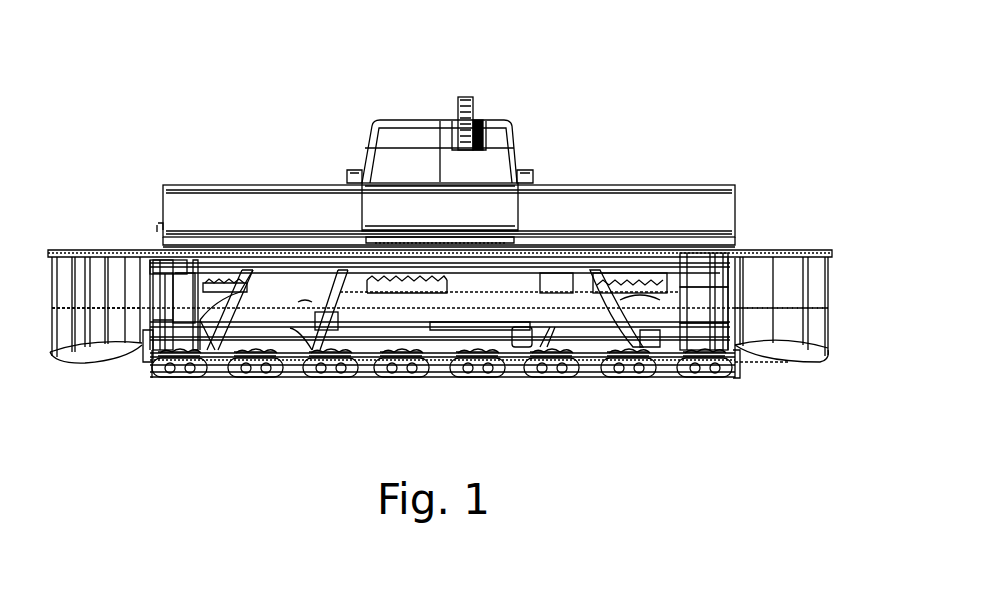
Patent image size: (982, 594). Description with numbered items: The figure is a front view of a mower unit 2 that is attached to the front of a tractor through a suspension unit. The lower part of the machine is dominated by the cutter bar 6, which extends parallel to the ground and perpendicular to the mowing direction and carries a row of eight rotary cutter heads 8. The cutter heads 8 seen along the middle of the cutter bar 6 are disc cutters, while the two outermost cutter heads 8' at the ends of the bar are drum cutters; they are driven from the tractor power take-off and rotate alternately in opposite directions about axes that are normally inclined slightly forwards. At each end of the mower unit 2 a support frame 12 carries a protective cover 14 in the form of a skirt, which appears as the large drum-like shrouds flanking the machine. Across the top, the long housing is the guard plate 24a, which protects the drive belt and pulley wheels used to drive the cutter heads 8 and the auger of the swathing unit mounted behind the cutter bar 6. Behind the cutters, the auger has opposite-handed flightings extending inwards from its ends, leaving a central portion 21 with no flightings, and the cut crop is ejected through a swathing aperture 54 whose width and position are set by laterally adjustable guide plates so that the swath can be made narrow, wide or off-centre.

The mower unit 2 is at (701, 102).
The guard plate 24a is at (581, 200).
The support frame 12 is at (788, 247).
The protective cover 14 is at (817, 296).
The cutter bar 6 is at (215, 373).
The central portion 21 is at (380, 327).
The swathing aperture 54 is at (468, 283).
The rotary cutter heads 8 is at (442, 399).
The outermost cutter heads 8' is at (720, 393).